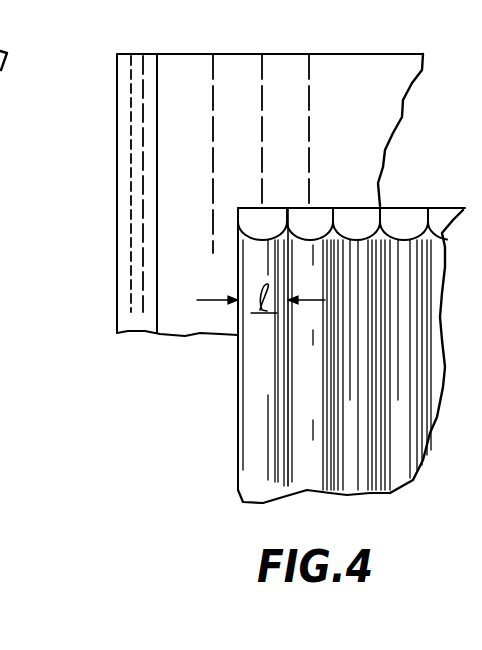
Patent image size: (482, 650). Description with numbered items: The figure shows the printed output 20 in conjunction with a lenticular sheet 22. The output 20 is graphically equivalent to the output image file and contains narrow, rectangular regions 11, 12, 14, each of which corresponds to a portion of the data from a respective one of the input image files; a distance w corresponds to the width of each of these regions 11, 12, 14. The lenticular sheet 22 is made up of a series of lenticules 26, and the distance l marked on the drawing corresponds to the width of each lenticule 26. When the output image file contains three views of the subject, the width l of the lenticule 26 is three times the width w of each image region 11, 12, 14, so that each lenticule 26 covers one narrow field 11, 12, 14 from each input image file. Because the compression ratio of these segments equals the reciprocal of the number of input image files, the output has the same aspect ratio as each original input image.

The region 11 is at (118, 52).
The region 12 is at (134, 53).
The region 14 is at (152, 53).
The output 20 is at (117, 125).
The lenticular sheet 22 is at (458, 207).
The lenticule 26 is at (250, 440).